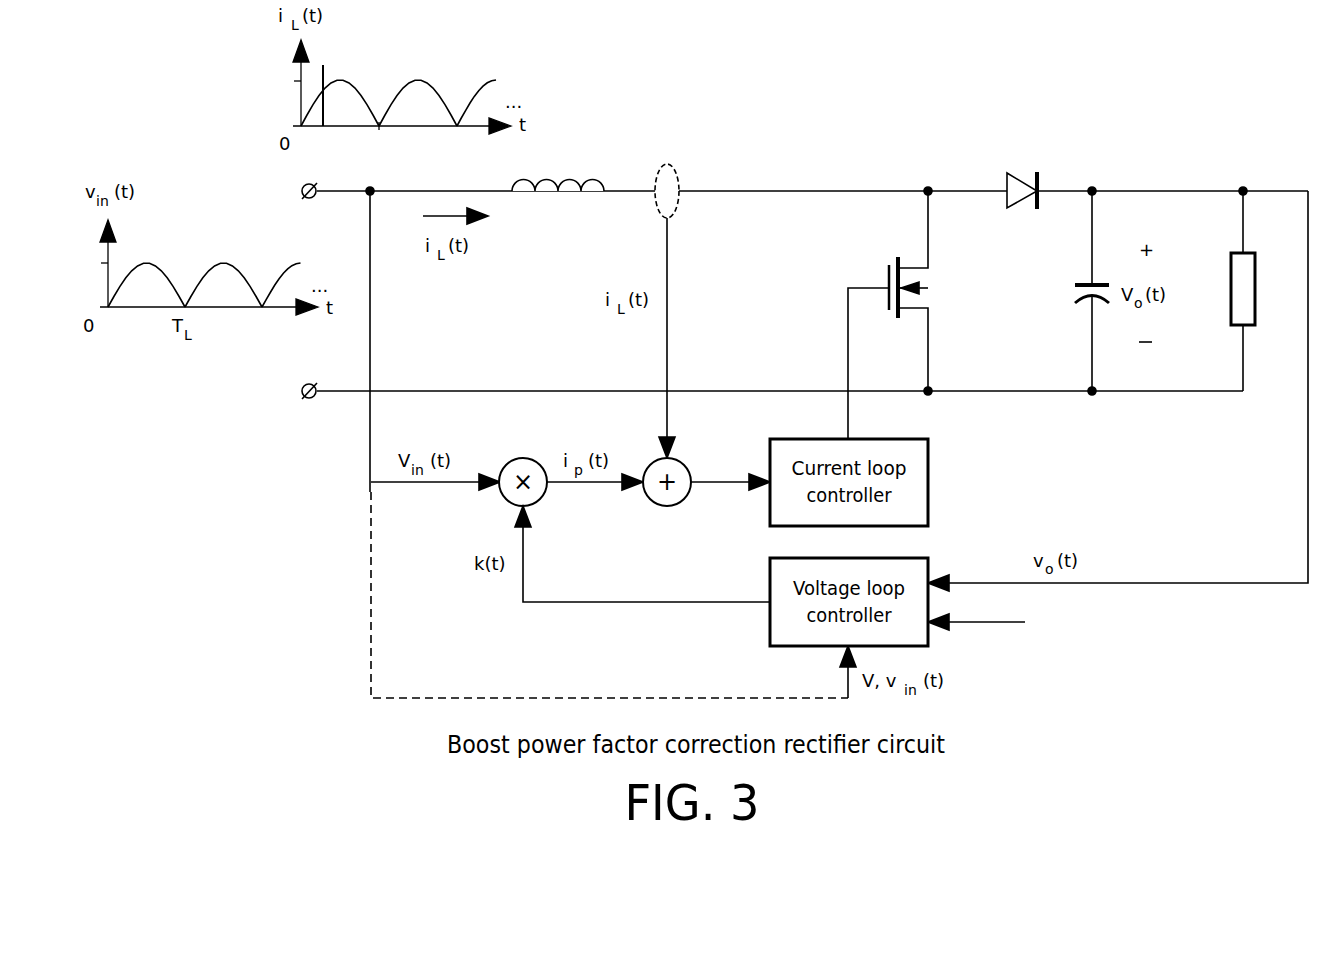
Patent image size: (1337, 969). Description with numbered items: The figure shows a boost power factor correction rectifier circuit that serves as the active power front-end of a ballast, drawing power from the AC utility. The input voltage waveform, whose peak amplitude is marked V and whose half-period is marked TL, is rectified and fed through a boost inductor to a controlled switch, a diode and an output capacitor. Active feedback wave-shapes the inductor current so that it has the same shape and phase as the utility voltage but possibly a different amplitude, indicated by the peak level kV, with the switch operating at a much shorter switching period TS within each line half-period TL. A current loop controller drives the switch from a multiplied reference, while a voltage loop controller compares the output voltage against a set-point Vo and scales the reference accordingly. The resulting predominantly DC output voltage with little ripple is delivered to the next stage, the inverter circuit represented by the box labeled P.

The inverter circuit P is at (1243, 291).
The switching period marker TS is at (338, 63).
The line half-period TL is at (378, 142).
The peak inductor current level kV is at (281, 81).
The peak input voltage level V is at (96, 264).
The output voltage reference Vo is at (992, 622).